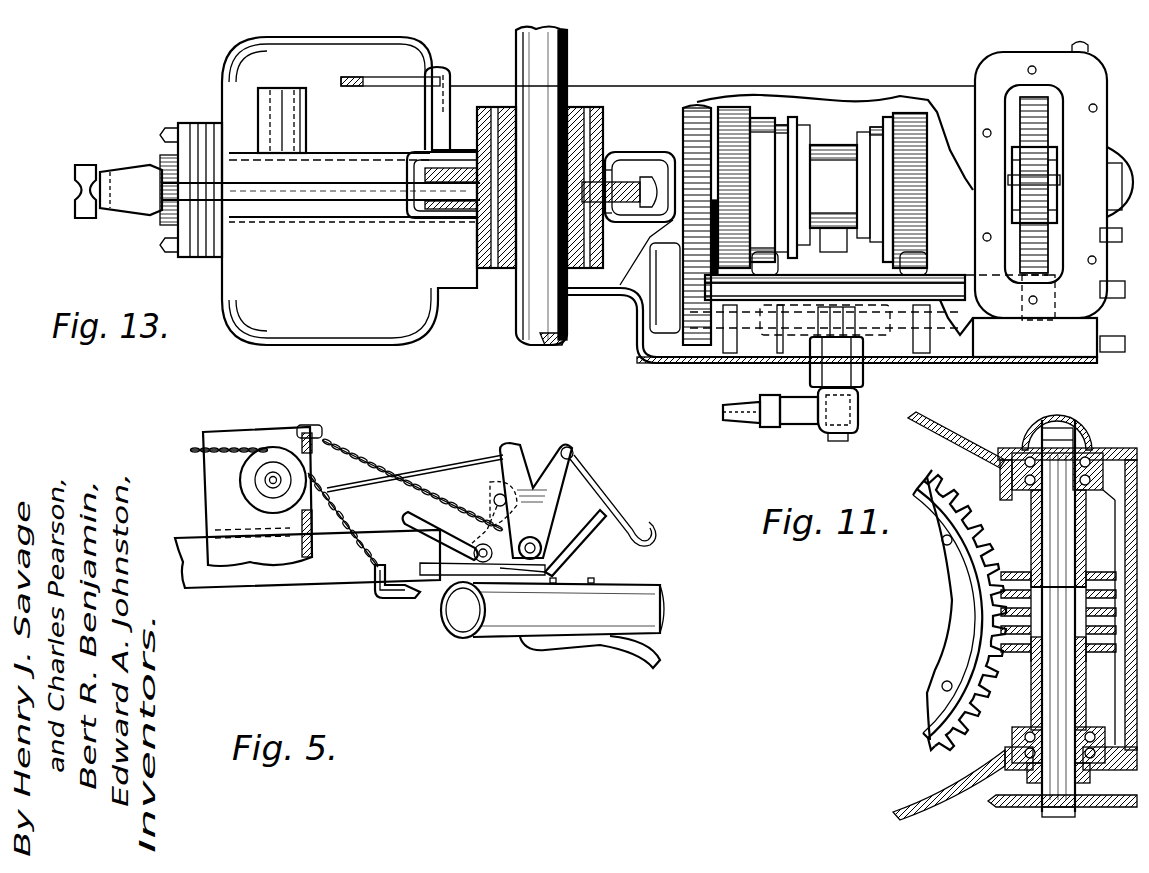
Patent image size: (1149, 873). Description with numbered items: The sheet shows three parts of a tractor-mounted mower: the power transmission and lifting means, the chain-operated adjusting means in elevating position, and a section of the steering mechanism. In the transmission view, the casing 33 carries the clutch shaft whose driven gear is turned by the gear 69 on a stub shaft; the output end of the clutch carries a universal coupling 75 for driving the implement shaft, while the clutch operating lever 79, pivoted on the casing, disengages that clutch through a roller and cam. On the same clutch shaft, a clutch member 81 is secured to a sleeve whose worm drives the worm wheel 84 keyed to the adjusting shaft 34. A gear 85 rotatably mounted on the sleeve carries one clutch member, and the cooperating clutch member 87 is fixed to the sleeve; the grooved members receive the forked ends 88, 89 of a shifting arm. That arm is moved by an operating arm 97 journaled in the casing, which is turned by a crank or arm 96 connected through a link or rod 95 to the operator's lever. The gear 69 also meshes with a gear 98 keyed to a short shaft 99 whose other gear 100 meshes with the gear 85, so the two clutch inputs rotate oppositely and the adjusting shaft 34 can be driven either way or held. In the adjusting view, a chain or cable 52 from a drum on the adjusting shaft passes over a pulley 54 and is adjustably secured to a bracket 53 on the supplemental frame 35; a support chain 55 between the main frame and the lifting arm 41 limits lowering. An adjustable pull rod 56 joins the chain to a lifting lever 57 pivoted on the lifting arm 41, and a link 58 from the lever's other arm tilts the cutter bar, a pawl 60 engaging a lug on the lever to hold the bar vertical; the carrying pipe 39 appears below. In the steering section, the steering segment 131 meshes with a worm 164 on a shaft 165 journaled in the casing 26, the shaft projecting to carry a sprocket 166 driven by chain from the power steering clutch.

In FIG. 13, the casing 33 is at (345, 346).
In FIG. 13, the adjusting shaft 34 is at (567, 60).
In FIG. 13, the gear 69 is at (1045, 122).
In FIG. 13, the universal coupling 75 is at (108, 205).
In FIG. 13, the clutch operating lever 79 is at (450, 82).
In FIG. 13, the clutch member 81 is at (907, 108).
In FIG. 13, the worm wheel 84 is at (653, 212).
In FIG. 13, the gear 85 is at (683, 130).
In FIG. 13, the clutch member 87 is at (763, 111).
In FIG. 13, the forked end 88 is at (895, 263).
In FIG. 13, the forked end 89 is at (782, 268).
In FIG. 13, the link or rod 95 is at (735, 420).
In FIG. 13, the crank or arm 96 is at (818, 426).
In FIG. 13, the operating arm 97 is at (873, 363).
In FIG. 13, the gear 98 is at (1055, 283).
In FIG. 13, the short shaft 99 is at (955, 312).
In FIG. 13, the gear 100 is at (690, 362).
In FIG. 5, the supplemental frame 35 is at (350, 566).
In FIG. 5, the tube 39 is at (660, 605).
In FIG. 5, the lifting arm 41 is at (570, 563).
In FIG. 5, the chain or cable 52 is at (195, 453).
In FIG. 5, the bracket 53 is at (400, 598).
In FIG. 5, the pulley 54 is at (255, 498).
In FIG. 5, the support chain 55 is at (340, 449).
In FIG. 5, the adjustable pull rod 56 is at (402, 473).
In FIG. 5, the lifting lever 57 is at (573, 450).
In FIG. 5, the link 58 is at (592, 477).
In FIG. 5, the pawl 60 is at (408, 517).
In FIG. 11, the casing 26 is at (960, 442).
In FIG. 11, the steering segment 131 is at (930, 712).
In FIG. 11, the worm 164 is at (1093, 573).
In FIG. 11, the shaft 165 is at (1086, 525).
In FIG. 11, the sprocket 166 is at (988, 801).